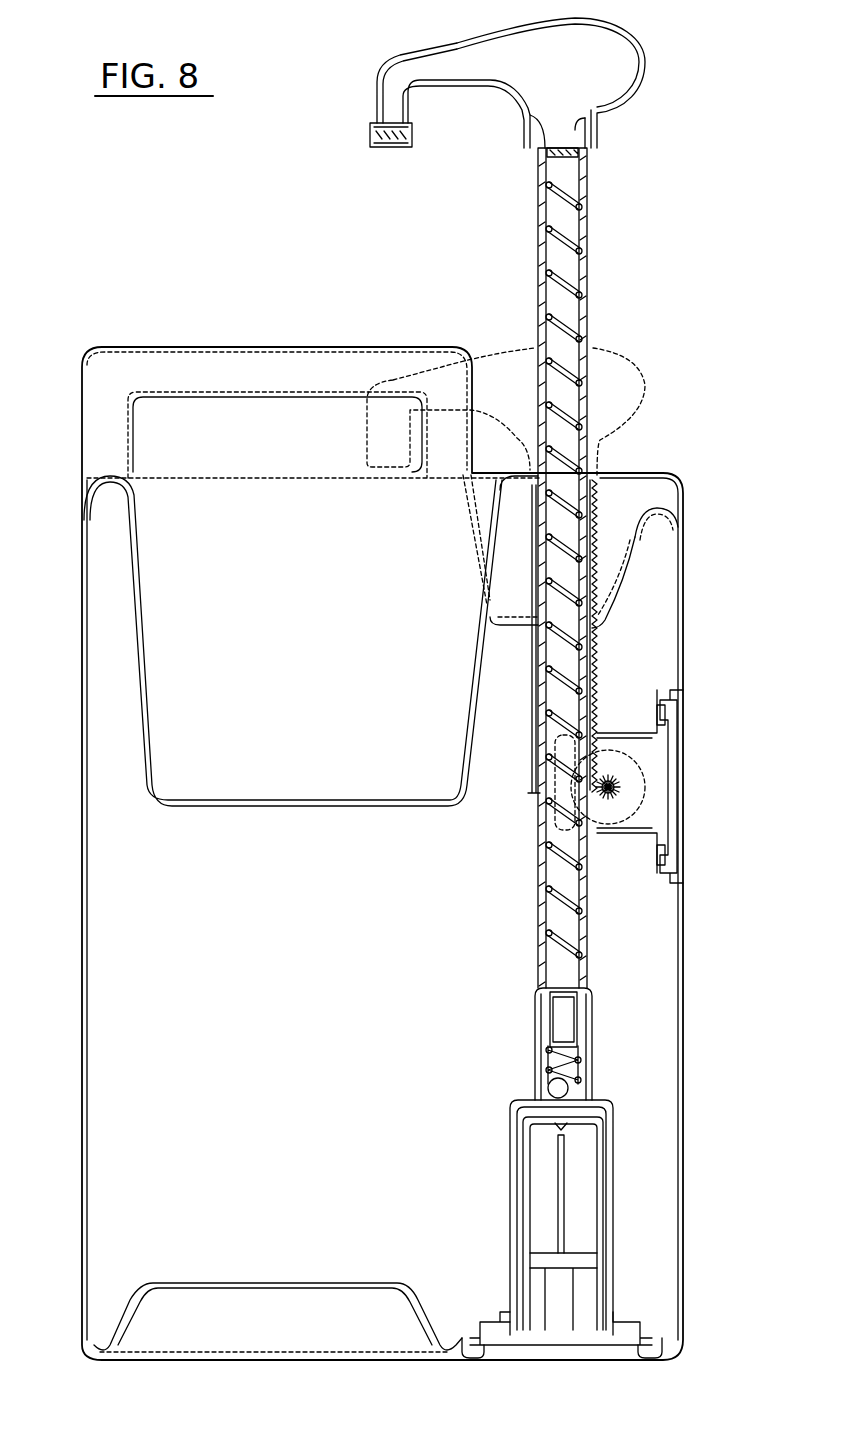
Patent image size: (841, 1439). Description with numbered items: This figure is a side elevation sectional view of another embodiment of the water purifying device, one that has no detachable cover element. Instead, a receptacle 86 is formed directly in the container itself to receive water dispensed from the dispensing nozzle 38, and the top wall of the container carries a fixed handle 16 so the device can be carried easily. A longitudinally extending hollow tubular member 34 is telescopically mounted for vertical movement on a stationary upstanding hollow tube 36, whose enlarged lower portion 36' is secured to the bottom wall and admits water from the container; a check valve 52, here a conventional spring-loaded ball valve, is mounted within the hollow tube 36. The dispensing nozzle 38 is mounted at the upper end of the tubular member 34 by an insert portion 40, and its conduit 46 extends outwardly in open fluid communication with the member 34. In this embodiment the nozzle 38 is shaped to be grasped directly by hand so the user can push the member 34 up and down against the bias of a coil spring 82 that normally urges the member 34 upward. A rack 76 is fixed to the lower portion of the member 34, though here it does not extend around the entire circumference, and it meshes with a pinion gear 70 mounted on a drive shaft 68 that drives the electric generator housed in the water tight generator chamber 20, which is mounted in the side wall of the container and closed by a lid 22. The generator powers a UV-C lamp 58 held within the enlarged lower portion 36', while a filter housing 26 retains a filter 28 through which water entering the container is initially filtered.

The fixed handle 16 is at (240, 370).
The generator chamber 20 is at (633, 727).
The lid 22 is at (683, 752).
The filter housing 26 is at (633, 575).
The filter 28 is at (620, 530).
The longitudinally extending hollow tubular member 34 is at (592, 275).
The hollow tube 36 is at (582, 1018).
The enlarged lower portion 36' is at (562, 1229).
The dispensing nozzle 38 is at (645, 62).
The insert portion 40 is at (570, 152).
The conduit 46 is at (455, 60).
The check valve 52 is at (568, 1086).
The UV-C lamp 58 is at (575, 1155).
The drive shaft 68 is at (615, 792).
The pinion gear 70 is at (615, 785).
The rack 76 is at (600, 660).
The coil spring 82 is at (565, 240).
The receptacle 86 is at (205, 580).